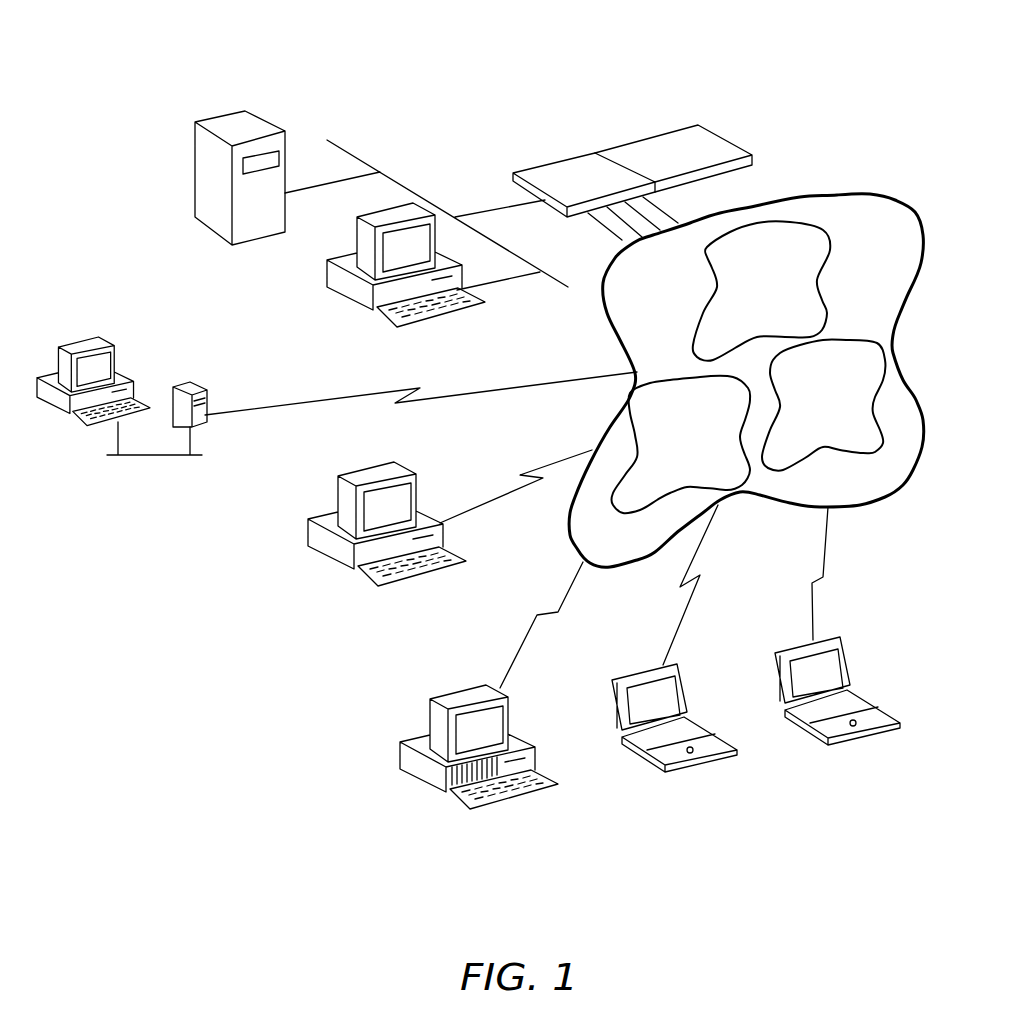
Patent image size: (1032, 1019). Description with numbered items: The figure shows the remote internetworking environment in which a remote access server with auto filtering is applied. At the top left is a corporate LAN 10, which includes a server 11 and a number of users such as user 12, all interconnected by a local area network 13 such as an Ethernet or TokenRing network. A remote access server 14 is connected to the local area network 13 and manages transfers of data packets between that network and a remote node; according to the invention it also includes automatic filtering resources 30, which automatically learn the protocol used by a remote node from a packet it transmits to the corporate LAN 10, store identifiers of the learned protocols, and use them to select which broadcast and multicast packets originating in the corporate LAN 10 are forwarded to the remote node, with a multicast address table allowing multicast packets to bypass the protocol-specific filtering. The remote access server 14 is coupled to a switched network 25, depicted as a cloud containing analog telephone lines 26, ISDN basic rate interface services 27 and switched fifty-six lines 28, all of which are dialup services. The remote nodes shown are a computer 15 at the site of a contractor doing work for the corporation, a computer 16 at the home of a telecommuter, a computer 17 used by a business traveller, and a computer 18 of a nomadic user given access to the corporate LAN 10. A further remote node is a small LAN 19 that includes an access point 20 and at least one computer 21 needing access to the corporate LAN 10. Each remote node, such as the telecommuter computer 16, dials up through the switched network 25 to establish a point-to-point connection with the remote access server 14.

The corporate LAN 10 is at (385, 93).
The server 11 is at (227, 122).
The user 12 is at (363, 237).
The local area network 13 is at (397, 178).
The remote access server 14 is at (595, 155).
The computer 15 is at (333, 483).
The computer 16 is at (437, 792).
The computer 17 is at (683, 667).
The computer 18 is at (852, 648).
The small LAN 19 is at (182, 456).
The access point 20 is at (195, 380).
The computer 21 is at (93, 342).
The switched network 25 is at (847, 197).
The analog telephone lines 26 is at (817, 252).
The basic rate interface (BRI) services 27 is at (847, 345).
The Switched 56 lines 28 is at (687, 387).
The automatic filtering resources 30 is at (713, 145).